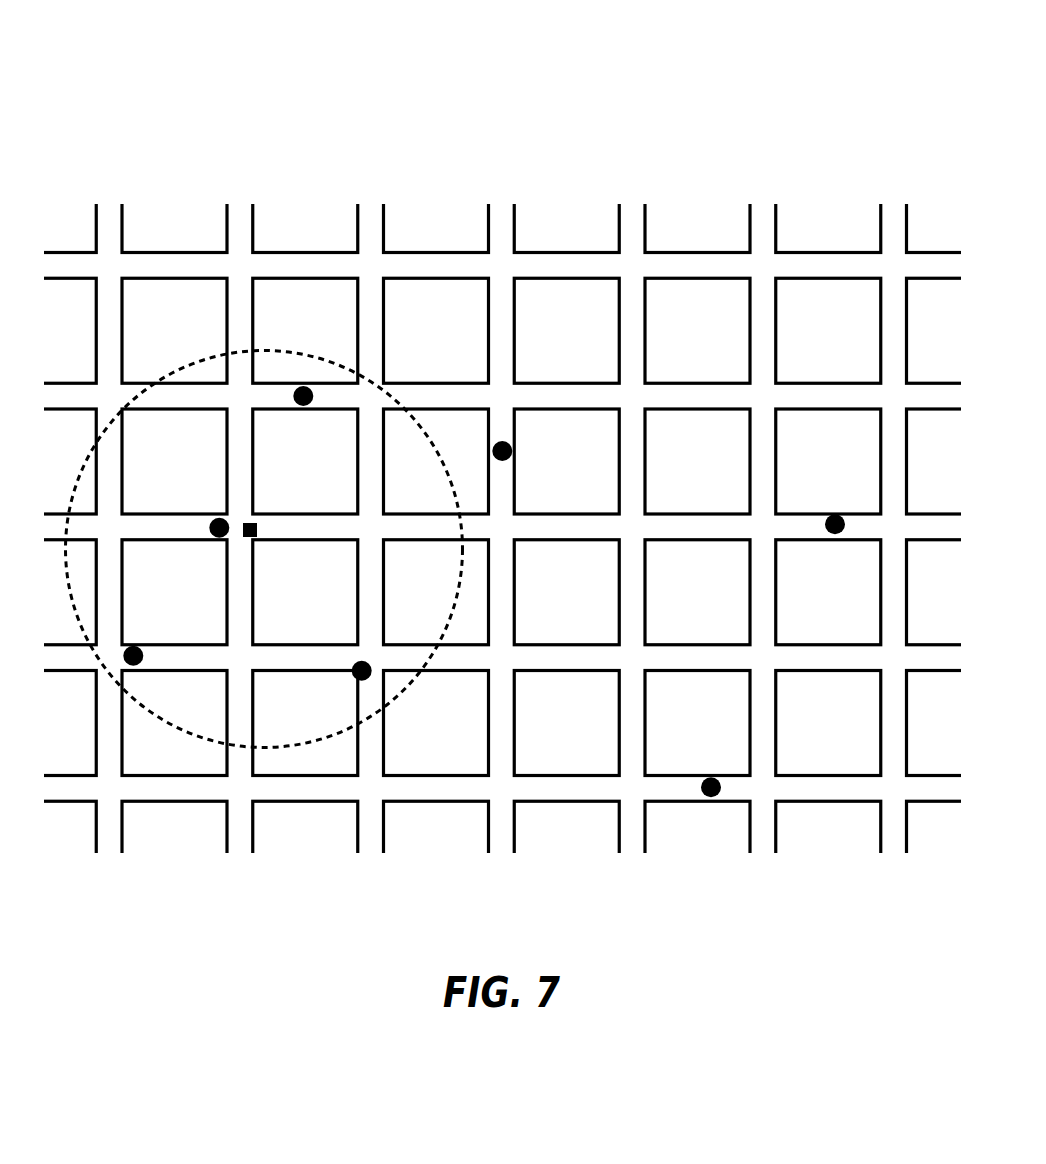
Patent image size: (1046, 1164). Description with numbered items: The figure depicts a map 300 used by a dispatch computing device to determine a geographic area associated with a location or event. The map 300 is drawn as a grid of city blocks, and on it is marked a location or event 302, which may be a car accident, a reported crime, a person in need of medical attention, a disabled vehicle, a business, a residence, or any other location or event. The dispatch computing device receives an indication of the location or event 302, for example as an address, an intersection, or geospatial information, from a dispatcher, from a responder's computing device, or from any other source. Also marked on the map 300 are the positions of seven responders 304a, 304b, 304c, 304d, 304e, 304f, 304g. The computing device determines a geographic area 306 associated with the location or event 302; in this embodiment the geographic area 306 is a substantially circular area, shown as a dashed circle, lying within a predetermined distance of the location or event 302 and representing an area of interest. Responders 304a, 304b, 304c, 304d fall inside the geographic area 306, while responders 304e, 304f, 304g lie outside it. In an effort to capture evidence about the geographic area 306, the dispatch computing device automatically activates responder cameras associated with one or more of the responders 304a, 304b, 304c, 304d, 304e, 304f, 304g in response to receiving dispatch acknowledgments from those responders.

The map 300 is at (845, 75).
The location or event 302 is at (257, 537).
The responder 304a is at (141, 648).
The responder 304b is at (214, 521).
The responder 304c is at (304, 406).
The responder 304d is at (358, 678).
The responder 304e is at (512, 451).
The responder 304f is at (705, 780).
The responder 304g is at (838, 515).
The geographic area 306 is at (291, 351).